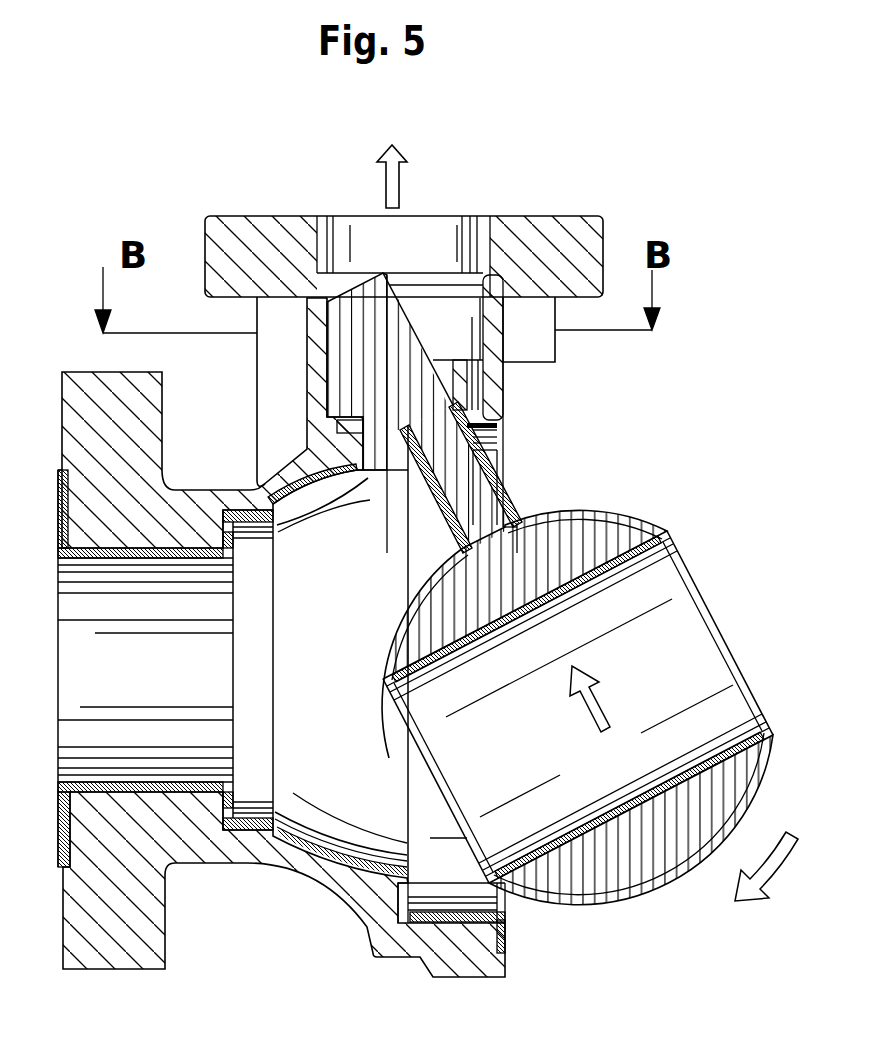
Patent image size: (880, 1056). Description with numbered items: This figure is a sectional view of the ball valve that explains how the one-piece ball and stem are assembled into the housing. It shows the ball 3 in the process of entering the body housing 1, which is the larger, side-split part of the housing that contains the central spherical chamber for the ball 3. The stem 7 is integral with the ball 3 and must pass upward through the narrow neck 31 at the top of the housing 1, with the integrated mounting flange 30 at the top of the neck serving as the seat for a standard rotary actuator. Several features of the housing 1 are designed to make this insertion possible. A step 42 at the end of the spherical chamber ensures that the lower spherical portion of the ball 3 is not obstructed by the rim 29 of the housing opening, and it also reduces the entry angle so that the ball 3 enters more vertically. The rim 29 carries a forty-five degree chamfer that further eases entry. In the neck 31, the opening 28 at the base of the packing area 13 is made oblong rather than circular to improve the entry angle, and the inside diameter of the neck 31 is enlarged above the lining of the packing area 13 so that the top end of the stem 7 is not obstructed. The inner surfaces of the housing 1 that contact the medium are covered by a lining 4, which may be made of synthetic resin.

The body housing 1 is at (347, 883).
The ball 3 is at (566, 543).
The lining 4 is at (292, 837).
The stem 7 is at (462, 454).
The packing area 13 is at (338, 372).
The opening 28 is at (383, 452).
The rim 29 is at (508, 917).
The integrated mounting flange 30 is at (561, 216).
The neck 31 is at (494, 336).
The step 42 is at (427, 915).